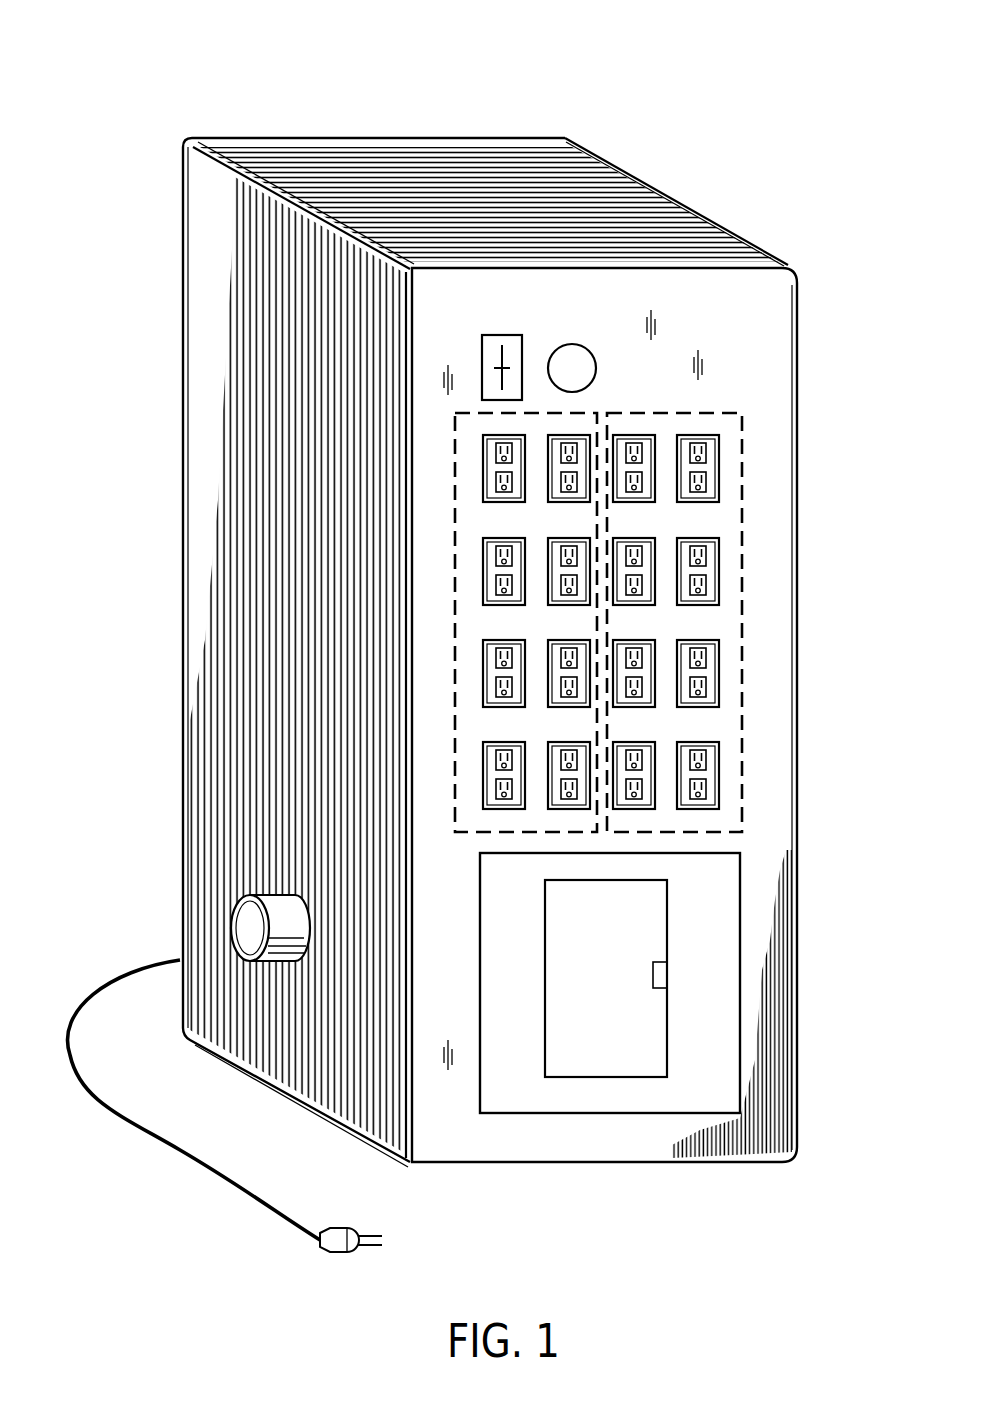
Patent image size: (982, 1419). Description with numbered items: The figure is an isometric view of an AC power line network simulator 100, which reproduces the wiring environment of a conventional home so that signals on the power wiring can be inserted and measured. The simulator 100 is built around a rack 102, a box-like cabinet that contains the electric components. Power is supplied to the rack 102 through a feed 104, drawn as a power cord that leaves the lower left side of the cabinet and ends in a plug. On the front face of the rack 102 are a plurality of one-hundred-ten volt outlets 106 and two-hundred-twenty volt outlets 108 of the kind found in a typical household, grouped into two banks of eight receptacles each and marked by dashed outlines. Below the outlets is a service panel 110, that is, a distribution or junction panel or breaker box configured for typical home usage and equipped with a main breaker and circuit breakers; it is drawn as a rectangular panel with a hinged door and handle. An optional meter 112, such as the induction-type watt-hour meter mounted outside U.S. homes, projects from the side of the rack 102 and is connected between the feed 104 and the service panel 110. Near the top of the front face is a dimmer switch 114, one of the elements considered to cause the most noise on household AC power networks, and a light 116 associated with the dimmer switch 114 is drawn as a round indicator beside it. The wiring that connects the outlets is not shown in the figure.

The AC power line network simulator 100 is at (445, 122).
The rack 102 is at (802, 390).
The feed 104 is at (96, 1097).
The 110 V outlets 106 is at (453, 530).
The 220 V outlets 108 is at (743, 551).
The service panel 110 is at (740, 922).
The meter 112 is at (268, 893).
The dimmer switch 114 is at (482, 355).
The light 116 is at (597, 362).